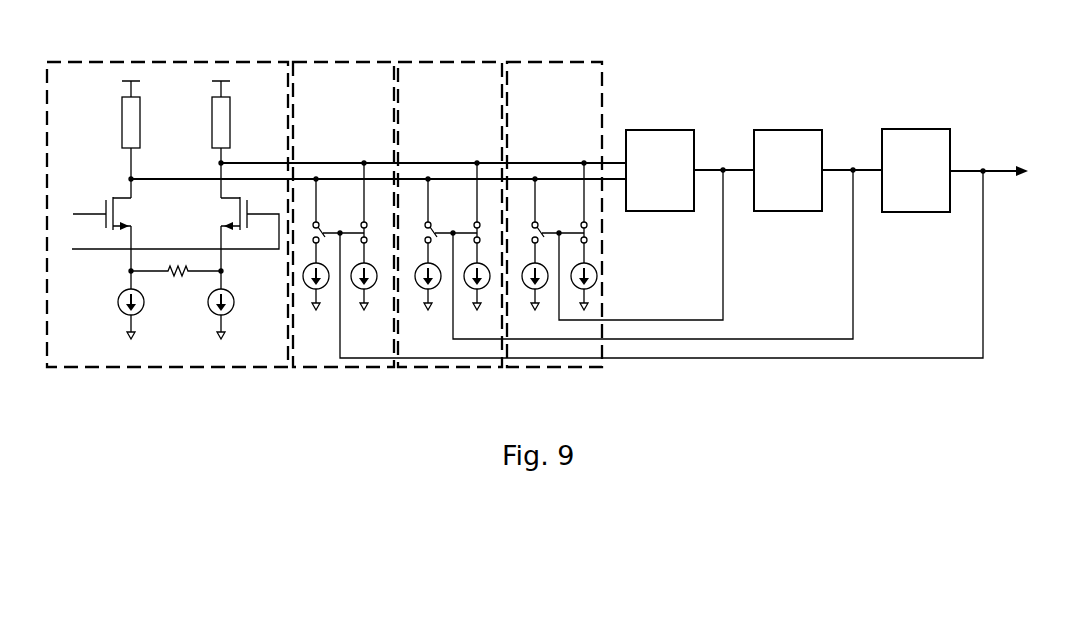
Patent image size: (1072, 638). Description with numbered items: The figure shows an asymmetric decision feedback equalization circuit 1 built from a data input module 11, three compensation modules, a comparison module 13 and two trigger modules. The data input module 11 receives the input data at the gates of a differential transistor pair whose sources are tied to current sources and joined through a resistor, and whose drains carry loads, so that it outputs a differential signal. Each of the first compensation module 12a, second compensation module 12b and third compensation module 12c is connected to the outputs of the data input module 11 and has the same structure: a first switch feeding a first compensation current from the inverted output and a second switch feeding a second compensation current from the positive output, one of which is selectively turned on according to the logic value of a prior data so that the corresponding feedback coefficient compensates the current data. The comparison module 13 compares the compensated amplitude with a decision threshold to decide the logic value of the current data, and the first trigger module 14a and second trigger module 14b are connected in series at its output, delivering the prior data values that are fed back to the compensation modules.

The asymmetric decision feedback equalization circuit 1 is at (756, 64).
The data input module 11 is at (245, 62).
The first compensation module 12a is at (338, 62).
The second compensation module 12b is at (443, 62).
The third compensation module 12c is at (551, 62).
The comparison module 13 is at (660, 130).
The first trigger module 14a is at (787, 130).
The second trigger module 14b is at (917, 130).